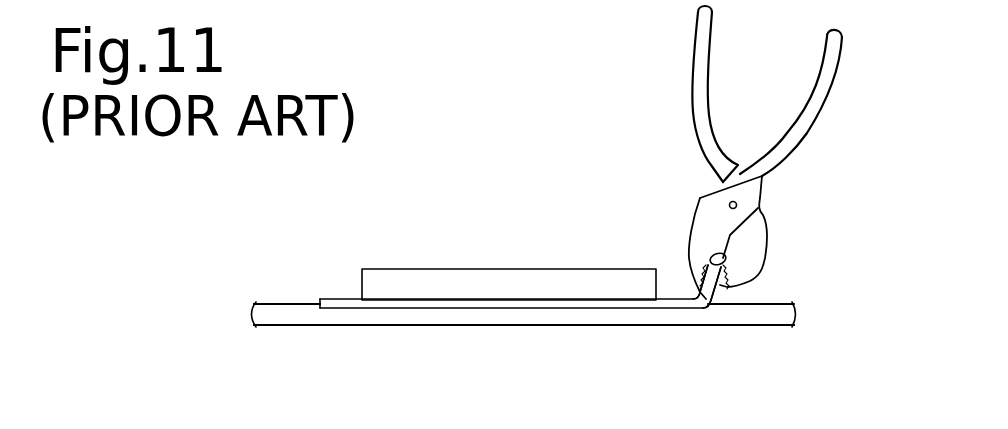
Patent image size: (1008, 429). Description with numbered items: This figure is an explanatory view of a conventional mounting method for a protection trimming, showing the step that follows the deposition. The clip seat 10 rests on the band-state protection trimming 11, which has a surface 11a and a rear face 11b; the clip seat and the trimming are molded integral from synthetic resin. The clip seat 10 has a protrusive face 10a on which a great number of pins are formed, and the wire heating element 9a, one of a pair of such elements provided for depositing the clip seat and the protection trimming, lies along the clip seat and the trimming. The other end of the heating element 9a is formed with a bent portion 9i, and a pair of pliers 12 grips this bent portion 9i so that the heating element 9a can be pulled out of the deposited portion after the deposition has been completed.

The wire heating element 9a is at (687, 318).
The bent portion 9i is at (735, 286).
The clip seat 10 is at (552, 269).
The protrusive face 10a is at (453, 298).
The protection trimming 11 is at (300, 313).
The surface of the protection trimming 11a is at (407, 325).
The rear face of the protection trimming 11b is at (285, 304).
The pliers 12 is at (827, 68).